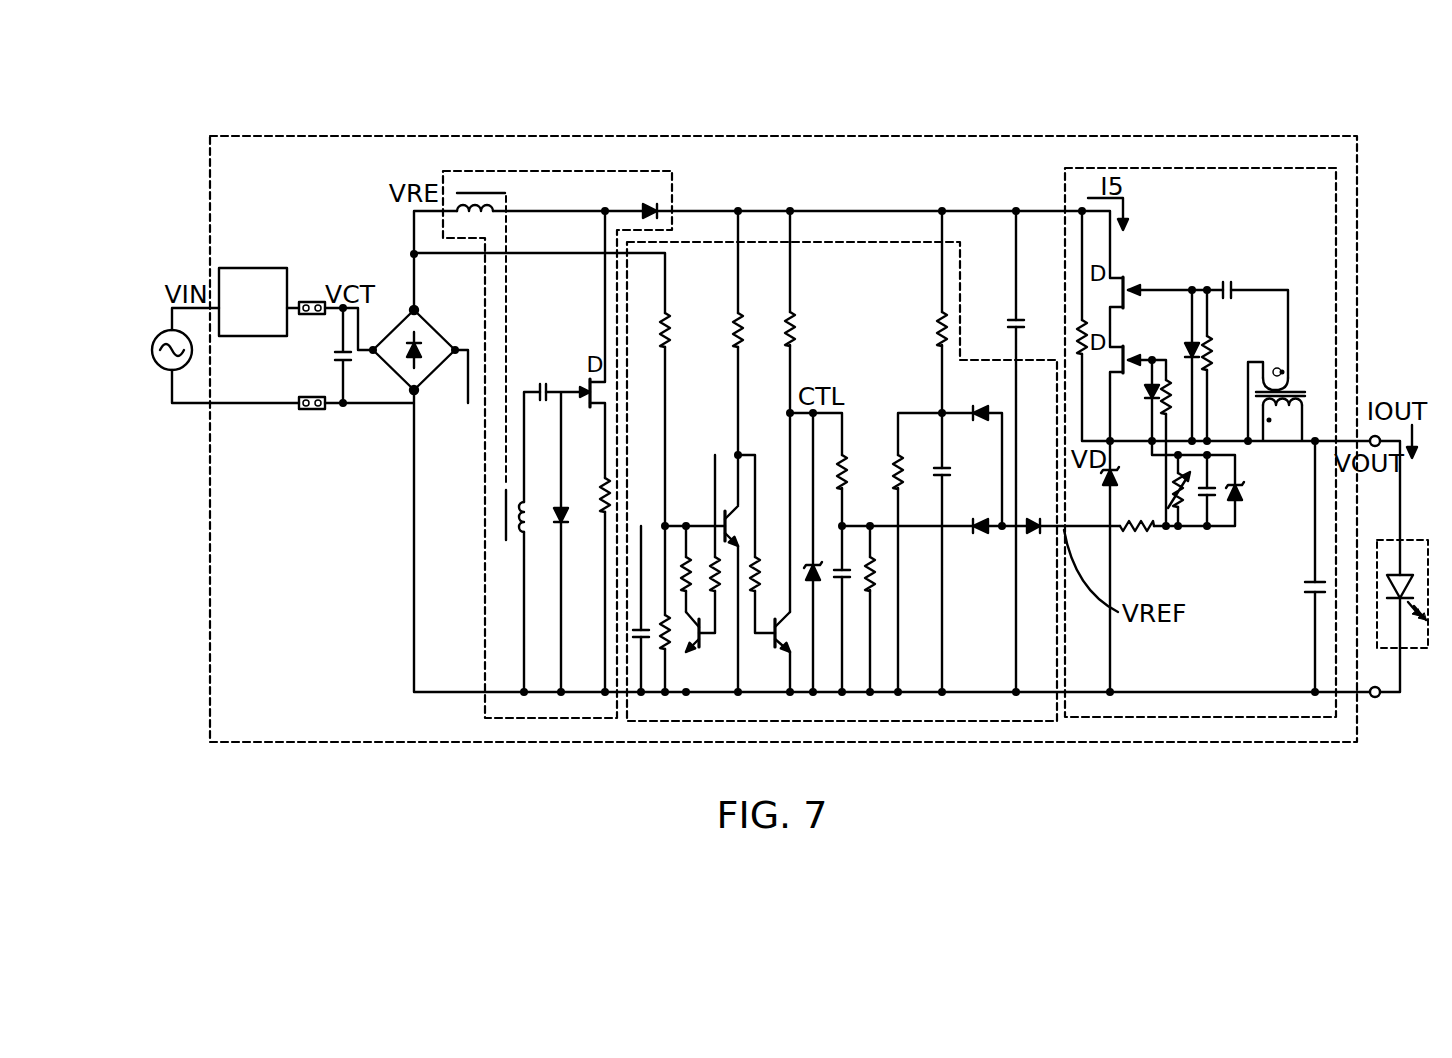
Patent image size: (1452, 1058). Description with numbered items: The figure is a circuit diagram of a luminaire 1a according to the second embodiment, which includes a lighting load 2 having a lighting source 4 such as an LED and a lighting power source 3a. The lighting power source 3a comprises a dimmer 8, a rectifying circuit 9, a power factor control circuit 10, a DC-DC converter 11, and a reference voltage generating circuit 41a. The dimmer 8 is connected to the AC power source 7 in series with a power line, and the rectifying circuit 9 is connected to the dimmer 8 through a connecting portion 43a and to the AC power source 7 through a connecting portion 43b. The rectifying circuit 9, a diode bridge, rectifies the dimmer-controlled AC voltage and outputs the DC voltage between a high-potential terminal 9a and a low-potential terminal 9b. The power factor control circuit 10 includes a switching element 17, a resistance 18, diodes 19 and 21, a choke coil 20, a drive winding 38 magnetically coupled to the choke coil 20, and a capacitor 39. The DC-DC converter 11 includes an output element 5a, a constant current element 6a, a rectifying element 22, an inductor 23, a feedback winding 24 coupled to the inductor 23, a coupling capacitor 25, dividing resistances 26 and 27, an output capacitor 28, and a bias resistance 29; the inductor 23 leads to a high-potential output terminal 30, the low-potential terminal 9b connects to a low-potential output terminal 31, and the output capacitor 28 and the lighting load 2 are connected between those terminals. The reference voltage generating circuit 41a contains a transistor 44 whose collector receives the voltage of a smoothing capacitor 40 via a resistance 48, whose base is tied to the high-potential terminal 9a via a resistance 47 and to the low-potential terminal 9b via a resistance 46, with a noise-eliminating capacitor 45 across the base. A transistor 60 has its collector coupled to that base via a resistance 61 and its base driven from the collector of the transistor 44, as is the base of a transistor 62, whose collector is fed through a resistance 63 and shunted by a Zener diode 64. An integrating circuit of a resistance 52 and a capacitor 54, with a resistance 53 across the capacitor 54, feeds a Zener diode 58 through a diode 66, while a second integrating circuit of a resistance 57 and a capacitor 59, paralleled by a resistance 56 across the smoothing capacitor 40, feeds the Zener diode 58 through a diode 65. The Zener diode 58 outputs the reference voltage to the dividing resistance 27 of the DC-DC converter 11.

The luminaire 1a is at (816, 385).
The lighting load 2 is at (1400, 564).
The lighting power source 3a is at (1235, 135).
The lighting source 4 is at (1405, 570).
The output element 5a is at (1125, 273).
The constant current element 6a is at (1125, 345).
The AC power source 7 is at (172, 330).
The dimmer 8 is at (253, 268).
The rectifying circuit 9 is at (398, 325).
The high-potential terminal 9a is at (410, 304).
The low-potential terminal 9b is at (409, 394).
The power factor control circuit 10 is at (583, 171).
The DC-DC converter 11 is at (1145, 168).
The switching element 17 is at (581, 388).
The resistance 18 is at (598, 500).
The diode 19 is at (553, 512).
The choke coil 20 is at (477, 188).
The diode 21 is at (648, 202).
The rectifying element 22 is at (1120, 478).
The inductor 23 is at (1287, 424).
The feedback winding 24 is at (1278, 366).
The coupling capacitor 25 is at (1227, 285).
The dividing resistance 26 is at (1188, 520).
The dividing resistance 27 is at (1140, 534).
The output capacitor 28 is at (1310, 588).
The bias resistance 29 is at (1072, 340).
The high-potential output terminal 30 is at (1358, 433).
The low-potential output terminal 31 is at (1378, 700).
The drive winding 38 is at (537, 520).
The capacitor 39 is at (540, 383).
The smoothing capacitor 40 is at (1005, 323).
The reference voltage generating circuit 41a is at (840, 242).
The connecting portion 43a is at (310, 300).
The connecting portion 43b is at (313, 410).
The transistor 44 is at (733, 511).
The capacitor 45 is at (646, 640).
The resistance 46 is at (670, 650).
The resistance 47 is at (680, 330).
The resistance 48 is at (748, 330).
The resistance 52 is at (848, 468).
The resistance 53 is at (874, 585).
The capacitor 54 is at (846, 582).
The resistance 56 is at (882, 470).
The resistance 57 is at (932, 326).
The Zener diode 58 is at (1034, 540).
The capacitor 59 is at (952, 470).
The transistor 60 is at (705, 647).
The resistance 61 is at (698, 570).
The transistor 62 is at (781, 648).
The resistance 63 is at (800, 330).
The Zener diode 64 is at (818, 585).
The diode 65 is at (972, 406).
The diode 66 is at (979, 540).